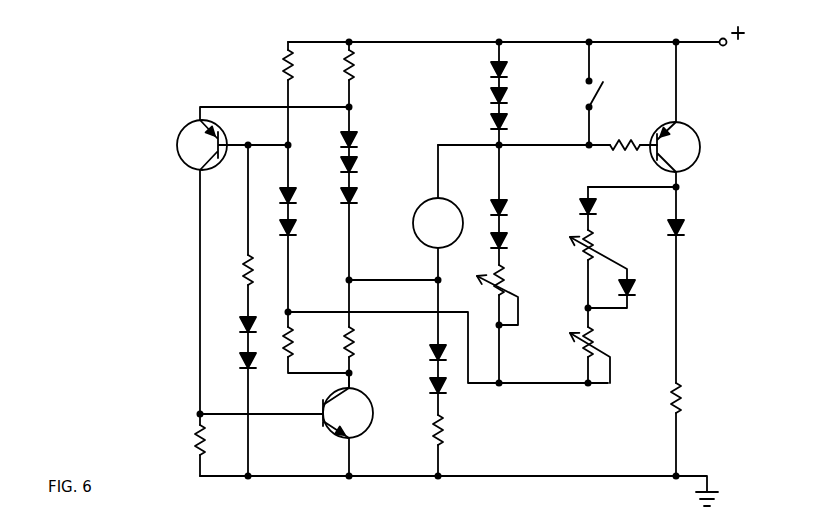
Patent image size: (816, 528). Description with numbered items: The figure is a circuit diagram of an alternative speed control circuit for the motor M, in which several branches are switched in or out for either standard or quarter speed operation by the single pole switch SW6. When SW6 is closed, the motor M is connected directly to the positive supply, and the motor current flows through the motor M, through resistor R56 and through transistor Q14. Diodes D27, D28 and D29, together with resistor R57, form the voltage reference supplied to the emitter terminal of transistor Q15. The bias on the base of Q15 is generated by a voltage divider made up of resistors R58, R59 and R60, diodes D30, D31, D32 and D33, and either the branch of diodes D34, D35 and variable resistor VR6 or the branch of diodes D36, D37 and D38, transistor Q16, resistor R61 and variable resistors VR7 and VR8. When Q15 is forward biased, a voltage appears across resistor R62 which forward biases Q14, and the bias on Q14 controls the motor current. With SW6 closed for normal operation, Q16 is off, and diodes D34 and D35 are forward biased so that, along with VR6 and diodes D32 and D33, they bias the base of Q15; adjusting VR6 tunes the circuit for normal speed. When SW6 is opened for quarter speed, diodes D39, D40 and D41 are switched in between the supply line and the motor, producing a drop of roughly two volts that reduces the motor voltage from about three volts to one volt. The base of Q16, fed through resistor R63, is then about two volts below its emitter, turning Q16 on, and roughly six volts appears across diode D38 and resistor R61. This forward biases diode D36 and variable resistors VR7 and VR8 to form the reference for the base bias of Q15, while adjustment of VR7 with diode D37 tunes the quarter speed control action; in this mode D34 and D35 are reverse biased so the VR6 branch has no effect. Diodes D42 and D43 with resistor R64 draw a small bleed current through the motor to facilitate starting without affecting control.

The resistor R58 is at (268, 115).
The resistor R57 is at (367, 87).
The diode D27 is at (367, 144).
The diode D28 is at (367, 172).
The diode D29 is at (367, 255).
The diode D32 is at (306, 203).
The diode D33 is at (306, 270).
The resistor R59 is at (316, 350).
The resistor R56 is at (367, 357).
The transistor Q15 is at (218, 267).
The resistor R60 is at (229, 231).
The diode D30 is at (231, 334).
The diode D31 is at (231, 413).
The resistor R62 is at (176, 445).
The transistor Q14 is at (362, 424).
The motor M is at (438, 245).
The diode D42 is at (419, 361).
The diode D43 is at (419, 396).
The resistor R64 is at (459, 445).
The diode D39 is at (479, 65).
The diode D40 is at (479, 100).
The diode D41 is at (481, 156).
The diode D34 is at (517, 216).
The diode D35 is at (517, 249).
The variable resistor VR6 is at (509, 324).
The single pole switch SW6 is at (613, 93).
The resistor R63 is at (623, 133).
The transistor Q16 is at (692, 114).
The diode D36 is at (607, 208).
The variable resistor VR7 is at (601, 278).
The diode D37 is at (628, 294).
The variable resistor VR8 is at (601, 355).
The diode D38 is at (697, 285).
The resistor R61 is at (696, 429).